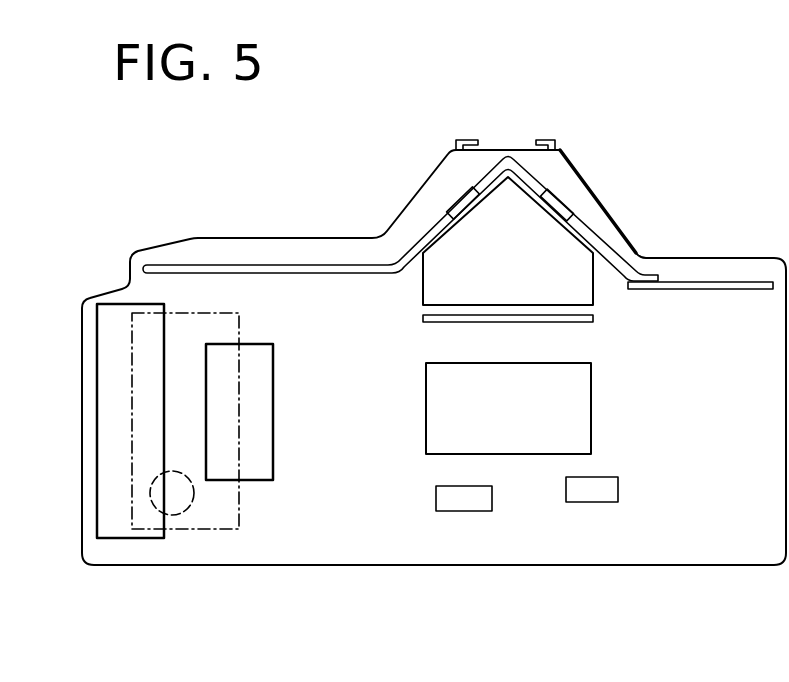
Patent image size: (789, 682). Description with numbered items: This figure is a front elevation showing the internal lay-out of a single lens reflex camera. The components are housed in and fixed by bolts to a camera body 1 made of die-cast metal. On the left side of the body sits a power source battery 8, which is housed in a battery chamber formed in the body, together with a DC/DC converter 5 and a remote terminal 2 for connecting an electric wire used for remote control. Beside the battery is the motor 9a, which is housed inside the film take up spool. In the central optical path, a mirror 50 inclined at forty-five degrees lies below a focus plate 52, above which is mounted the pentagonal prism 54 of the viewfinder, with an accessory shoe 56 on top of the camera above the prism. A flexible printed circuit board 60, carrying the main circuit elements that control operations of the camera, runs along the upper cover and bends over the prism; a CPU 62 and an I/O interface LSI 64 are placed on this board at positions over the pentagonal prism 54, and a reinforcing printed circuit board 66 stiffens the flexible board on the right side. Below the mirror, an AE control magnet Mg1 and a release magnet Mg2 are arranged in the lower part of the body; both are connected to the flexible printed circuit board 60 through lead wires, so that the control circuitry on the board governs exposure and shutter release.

The camera body 1 is at (705, 550).
The remote terminal 2 is at (177, 507).
The DC/DC converter 5 is at (218, 513).
The power source battery 8 is at (109, 377).
The motor 9a is at (258, 445).
The 45° mirror 50 is at (577, 410).
The focus plate 52 is at (587, 323).
The pentagonal prism 54 is at (593, 290).
The accessory shoe 56 is at (557, 147).
The flexible printed circuit board 60 is at (335, 268).
The CPU 62 is at (460, 202).
The I/O interface LSI 64 is at (556, 205).
The reinforcing printed circuit board 66 is at (736, 283).
The AE control magnet Mg1 is at (597, 500).
The release magnet Mg2 is at (470, 507).